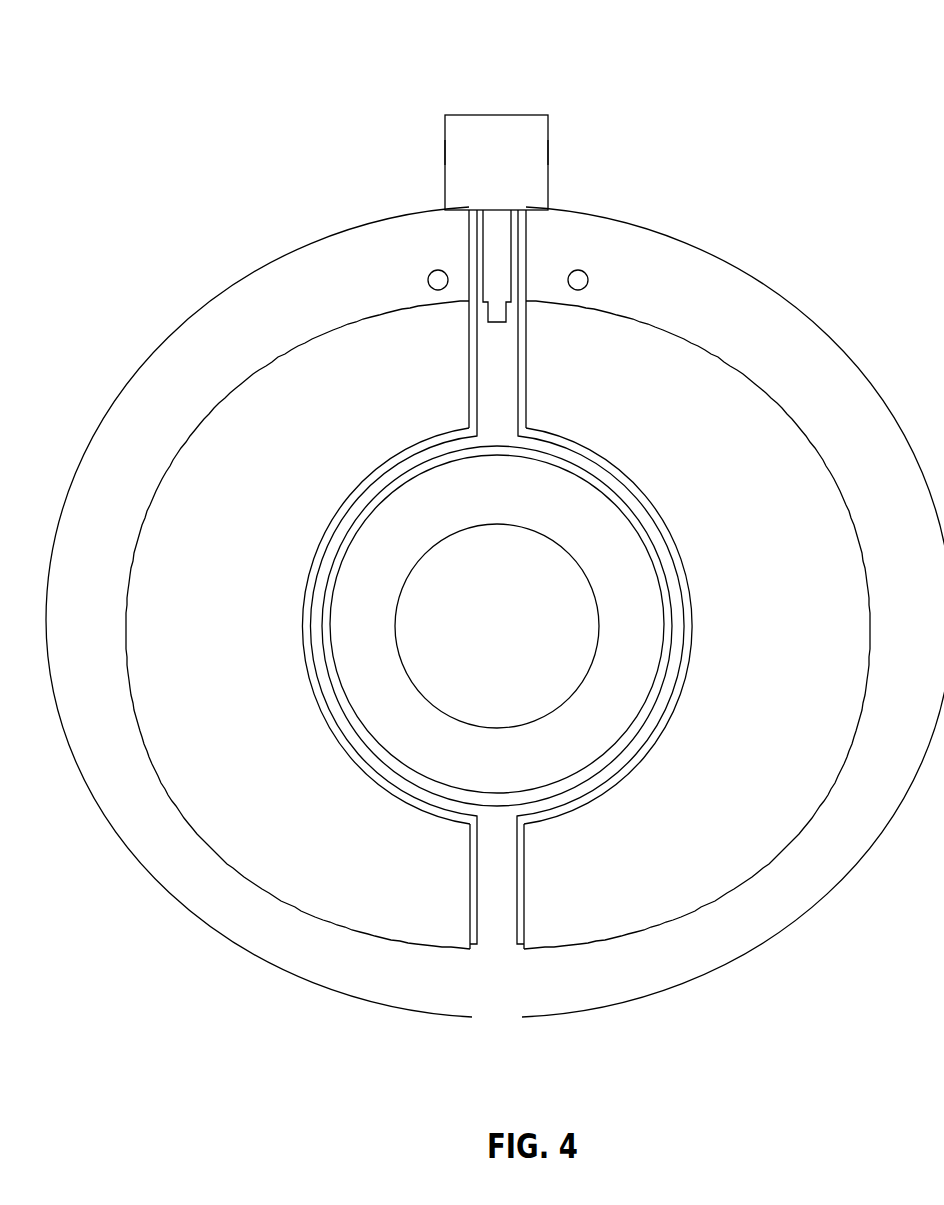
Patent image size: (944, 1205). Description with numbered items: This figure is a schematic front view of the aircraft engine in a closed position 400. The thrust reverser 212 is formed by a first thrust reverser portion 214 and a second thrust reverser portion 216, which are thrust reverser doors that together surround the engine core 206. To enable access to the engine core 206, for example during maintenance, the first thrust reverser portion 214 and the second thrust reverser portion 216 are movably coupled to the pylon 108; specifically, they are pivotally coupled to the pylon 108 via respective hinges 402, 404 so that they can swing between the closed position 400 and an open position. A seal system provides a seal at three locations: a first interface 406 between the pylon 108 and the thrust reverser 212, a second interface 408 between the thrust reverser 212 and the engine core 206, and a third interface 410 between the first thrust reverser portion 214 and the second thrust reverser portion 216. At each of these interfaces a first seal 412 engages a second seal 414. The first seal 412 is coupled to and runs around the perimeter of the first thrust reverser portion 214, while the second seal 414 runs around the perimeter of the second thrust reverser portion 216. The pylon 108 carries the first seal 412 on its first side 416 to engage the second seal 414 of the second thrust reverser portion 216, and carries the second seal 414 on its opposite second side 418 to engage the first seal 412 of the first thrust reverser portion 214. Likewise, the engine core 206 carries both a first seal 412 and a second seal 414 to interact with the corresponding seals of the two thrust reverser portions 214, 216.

The closed position 400 is at (768, 52).
The pylon 108 is at (475, 130).
The second side 418 is at (445, 152).
The first side 416 is at (548, 152).
The first interface 406 is at (535, 235).
The hinge 402 is at (436, 270).
The hinge 404 is at (580, 270).
The thrust reverser 212 is at (282, 201).
The first thrust reverser portion 214 is at (258, 268).
The second thrust reverser portion 216 is at (687, 241).
The second interface 408 is at (344, 483).
The engine core 206 is at (645, 712).
The first seal 412 is at (512, 282).
The second seal 414 is at (478, 285).
The third interface 410 is at (492, 956).